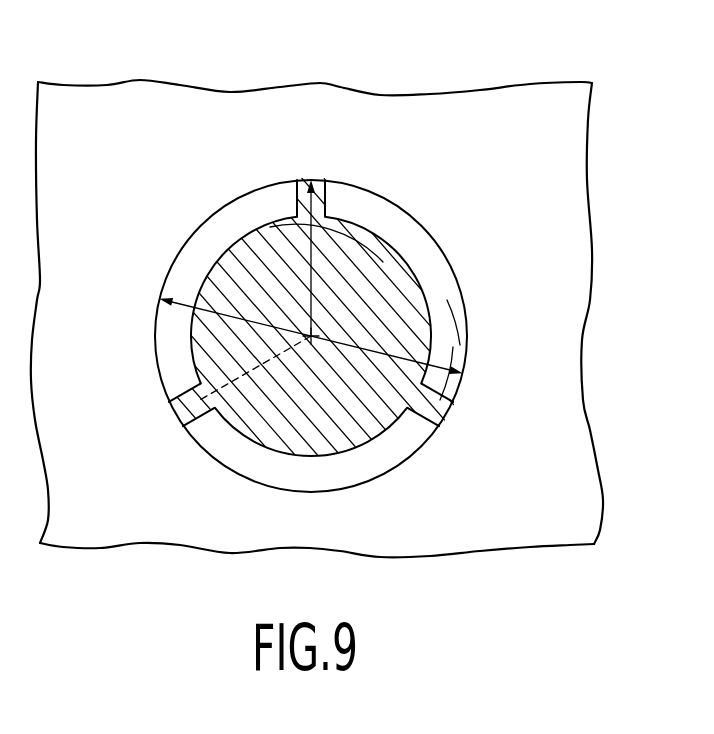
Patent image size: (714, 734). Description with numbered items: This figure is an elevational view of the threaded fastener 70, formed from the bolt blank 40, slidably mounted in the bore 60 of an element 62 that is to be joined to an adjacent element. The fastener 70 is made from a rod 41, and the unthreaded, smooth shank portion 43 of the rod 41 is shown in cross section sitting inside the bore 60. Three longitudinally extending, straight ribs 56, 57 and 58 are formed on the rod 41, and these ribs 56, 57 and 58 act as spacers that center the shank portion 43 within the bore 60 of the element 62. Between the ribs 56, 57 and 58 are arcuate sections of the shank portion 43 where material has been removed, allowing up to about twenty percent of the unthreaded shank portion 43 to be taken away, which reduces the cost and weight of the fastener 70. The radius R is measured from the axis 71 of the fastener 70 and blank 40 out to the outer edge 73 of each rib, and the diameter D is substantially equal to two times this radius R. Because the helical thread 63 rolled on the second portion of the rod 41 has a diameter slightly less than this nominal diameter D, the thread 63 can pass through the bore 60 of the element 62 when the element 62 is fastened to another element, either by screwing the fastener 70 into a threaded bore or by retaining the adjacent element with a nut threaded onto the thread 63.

The element 62 is at (332, 102).
The bore 60 is at (360, 202).
The bolt blank 40 is at (333, 430).
The rib 57 is at (304, 178).
The rib 56 is at (175, 408).
The rib 58 is at (440, 405).
The outer edge 73 is at (322, 178).
The shank portion 43 is at (383, 262).
The rod 41 is at (458, 300).
The thread 63 is at (453, 347).
The threaded fastener 70 is at (254, 273).
The axis 71 is at (313, 334).
The radius R is at (312, 290).
The diameter D is at (390, 356).